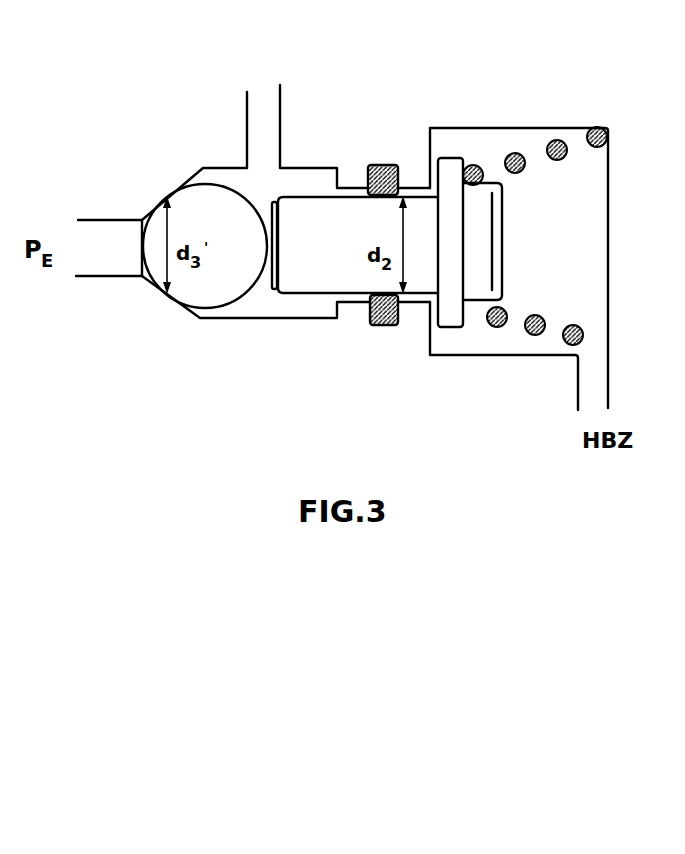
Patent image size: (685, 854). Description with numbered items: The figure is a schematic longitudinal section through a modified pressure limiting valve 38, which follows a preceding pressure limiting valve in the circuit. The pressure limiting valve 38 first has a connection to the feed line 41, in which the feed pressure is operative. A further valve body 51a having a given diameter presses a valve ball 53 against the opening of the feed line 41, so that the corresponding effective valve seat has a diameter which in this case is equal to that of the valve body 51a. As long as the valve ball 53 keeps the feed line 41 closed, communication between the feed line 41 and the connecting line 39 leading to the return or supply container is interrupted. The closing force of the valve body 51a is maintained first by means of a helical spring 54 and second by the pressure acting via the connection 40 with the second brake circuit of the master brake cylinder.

The pressure limiting valve 38 is at (360, 145).
The connecting line 39 is at (282, 108).
The connection 40 is at (608, 398).
The feed line 41 is at (110, 227).
The valve body 51a is at (311, 300).
The valve ball 53 is at (193, 295).
The helical spring 54 is at (608, 142).